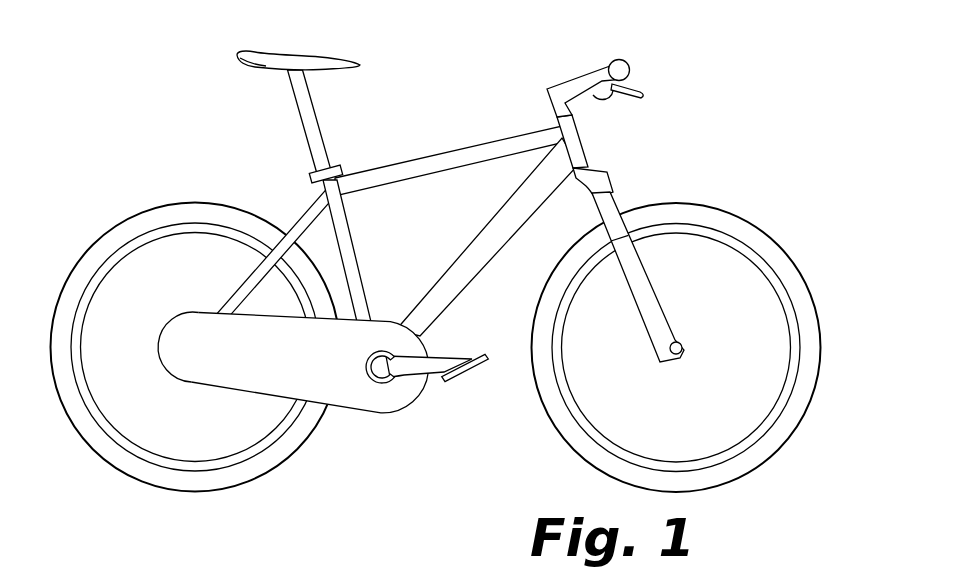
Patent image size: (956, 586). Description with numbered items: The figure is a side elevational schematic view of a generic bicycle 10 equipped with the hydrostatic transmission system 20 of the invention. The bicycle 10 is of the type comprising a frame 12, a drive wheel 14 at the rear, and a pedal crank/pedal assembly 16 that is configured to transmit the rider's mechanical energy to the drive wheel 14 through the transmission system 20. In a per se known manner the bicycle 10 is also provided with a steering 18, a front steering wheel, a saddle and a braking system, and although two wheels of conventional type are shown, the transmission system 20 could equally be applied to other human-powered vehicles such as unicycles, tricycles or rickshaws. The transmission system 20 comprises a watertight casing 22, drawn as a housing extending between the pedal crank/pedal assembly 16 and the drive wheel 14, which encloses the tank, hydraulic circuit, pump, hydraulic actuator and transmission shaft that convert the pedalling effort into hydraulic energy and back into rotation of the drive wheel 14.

The bicycle 10 is at (435, 278).
The frame 12 is at (436, 158).
The drive wheel 14 is at (112, 244).
The pedal crank/pedal assembly 16 is at (413, 369).
The steering 18 is at (580, 84).
The transmission system 20 is at (293, 432).
The watertight casing 22 is at (233, 372).